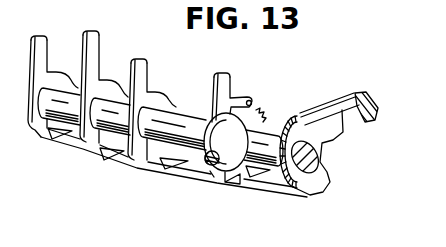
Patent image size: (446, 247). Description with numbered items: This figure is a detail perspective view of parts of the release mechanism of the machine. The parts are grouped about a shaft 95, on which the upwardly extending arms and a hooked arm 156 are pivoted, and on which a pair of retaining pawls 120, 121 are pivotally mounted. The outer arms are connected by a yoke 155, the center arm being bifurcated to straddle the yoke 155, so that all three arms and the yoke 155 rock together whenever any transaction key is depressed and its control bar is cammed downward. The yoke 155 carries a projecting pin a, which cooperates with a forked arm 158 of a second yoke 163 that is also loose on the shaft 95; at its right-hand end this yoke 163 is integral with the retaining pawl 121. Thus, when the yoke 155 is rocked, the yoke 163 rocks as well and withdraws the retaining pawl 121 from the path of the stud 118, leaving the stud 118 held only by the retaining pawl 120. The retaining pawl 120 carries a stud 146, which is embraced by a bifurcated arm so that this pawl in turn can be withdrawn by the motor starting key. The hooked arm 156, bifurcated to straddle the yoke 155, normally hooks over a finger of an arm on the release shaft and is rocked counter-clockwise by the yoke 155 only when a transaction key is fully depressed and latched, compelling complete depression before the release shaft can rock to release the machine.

The hooked arm 156 is at (107, 46).
The shaft 95 is at (188, 120).
The yoke 155 is at (167, 159).
The forked arm 158 is at (228, 173).
The pin a is at (210, 164).
The yoke 163 is at (240, 178).
The stud 146 is at (303, 114).
The retaining pawl 121 is at (342, 117).
The retaining pawl 120 is at (342, 94).
The stud 118 is at (364, 100).